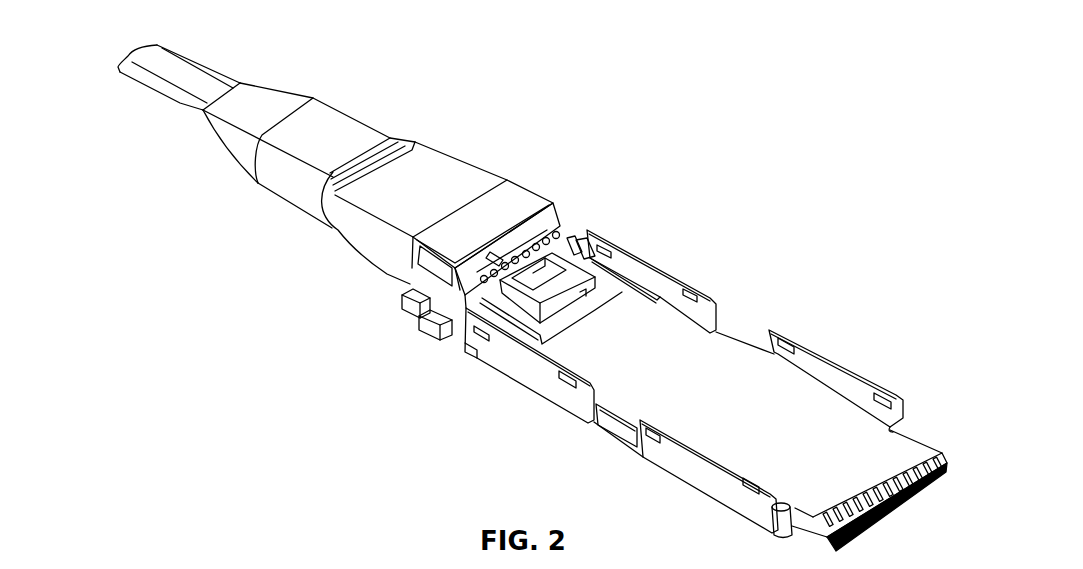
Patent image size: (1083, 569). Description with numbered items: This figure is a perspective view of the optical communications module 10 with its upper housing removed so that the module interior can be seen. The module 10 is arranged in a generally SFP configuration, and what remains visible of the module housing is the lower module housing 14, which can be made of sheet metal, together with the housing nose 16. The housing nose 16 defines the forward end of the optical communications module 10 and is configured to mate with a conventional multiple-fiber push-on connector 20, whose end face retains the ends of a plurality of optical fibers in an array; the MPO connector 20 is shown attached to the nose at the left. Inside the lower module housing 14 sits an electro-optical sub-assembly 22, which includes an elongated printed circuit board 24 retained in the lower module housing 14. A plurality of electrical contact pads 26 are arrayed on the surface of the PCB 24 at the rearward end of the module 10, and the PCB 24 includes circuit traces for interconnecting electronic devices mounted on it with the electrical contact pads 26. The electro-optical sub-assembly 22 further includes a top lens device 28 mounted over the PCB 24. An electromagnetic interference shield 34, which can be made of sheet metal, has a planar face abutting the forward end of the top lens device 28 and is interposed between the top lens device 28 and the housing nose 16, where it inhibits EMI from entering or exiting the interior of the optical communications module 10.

The optical communications module 10 is at (532, 298).
The lower module housing 14 is at (648, 463).
The housing nose 16 is at (533, 193).
The multiple-fiber push-on (MPO) connector 20 is at (440, 158).
The electro-optical sub-assembly 22 is at (585, 240).
The printed circuit board 24 is at (742, 353).
The electrical contact pads 26 is at (922, 448).
The top lens device 28 is at (517, 305).
The electromagnetic interference (EMI) shield 34 is at (468, 292).